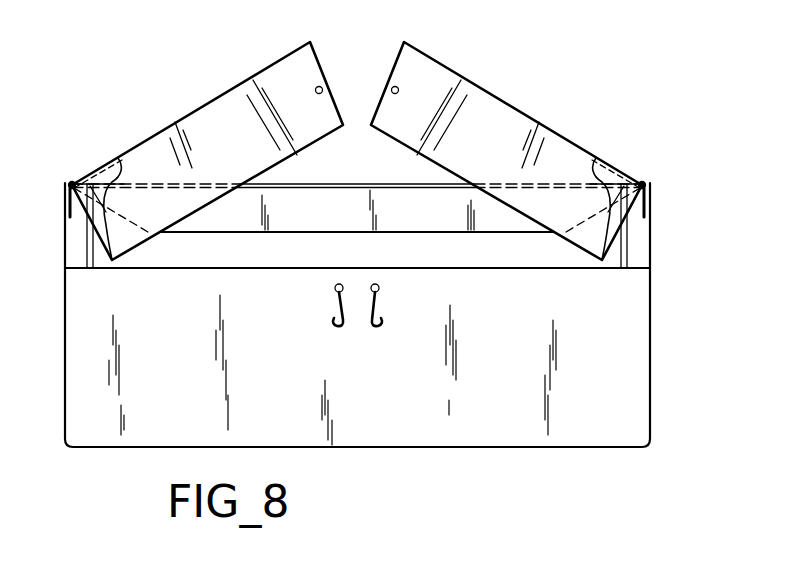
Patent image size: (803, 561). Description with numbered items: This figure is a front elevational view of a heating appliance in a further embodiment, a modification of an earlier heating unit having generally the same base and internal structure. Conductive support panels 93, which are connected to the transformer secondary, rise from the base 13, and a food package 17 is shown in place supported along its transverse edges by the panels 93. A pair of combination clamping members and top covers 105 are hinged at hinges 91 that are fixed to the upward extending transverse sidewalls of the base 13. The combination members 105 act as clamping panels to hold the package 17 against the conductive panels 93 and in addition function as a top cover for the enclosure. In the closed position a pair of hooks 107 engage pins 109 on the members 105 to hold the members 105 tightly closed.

The base 13 is at (652, 327).
The food package 17 is at (431, 224).
The hinge 91 is at (70, 183).
The conductive support panel 93 is at (87, 258).
The combination clamping member and top cover 105 is at (220, 111).
The hook 107 is at (373, 332).
The pin 109 is at (391, 90).